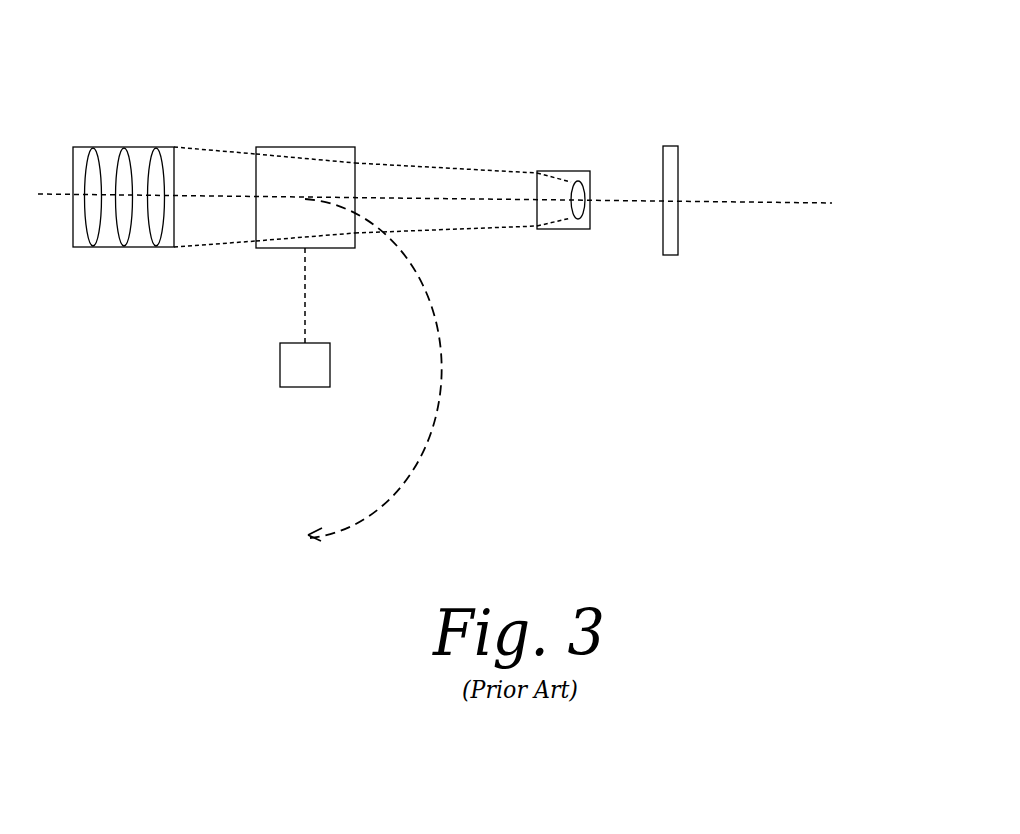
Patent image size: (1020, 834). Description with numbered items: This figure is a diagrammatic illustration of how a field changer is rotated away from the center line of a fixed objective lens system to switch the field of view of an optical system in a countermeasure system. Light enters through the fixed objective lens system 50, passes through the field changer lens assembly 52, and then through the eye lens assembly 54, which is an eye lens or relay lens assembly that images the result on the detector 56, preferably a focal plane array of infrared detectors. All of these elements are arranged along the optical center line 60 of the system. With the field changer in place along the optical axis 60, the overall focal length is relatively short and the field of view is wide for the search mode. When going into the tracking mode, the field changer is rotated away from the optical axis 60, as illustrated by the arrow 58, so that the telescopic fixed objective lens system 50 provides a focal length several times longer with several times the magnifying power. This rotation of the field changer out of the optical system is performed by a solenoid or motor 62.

The fixed objective lens system 50 is at (111, 147).
The field changer lens assembly 52 is at (307, 147).
The eye lens assembly 54 is at (563, 171).
The detector 56 is at (680, 157).
The arrow 58 is at (443, 343).
The optical center line 60 is at (727, 200).
The motor 62 is at (280, 365).